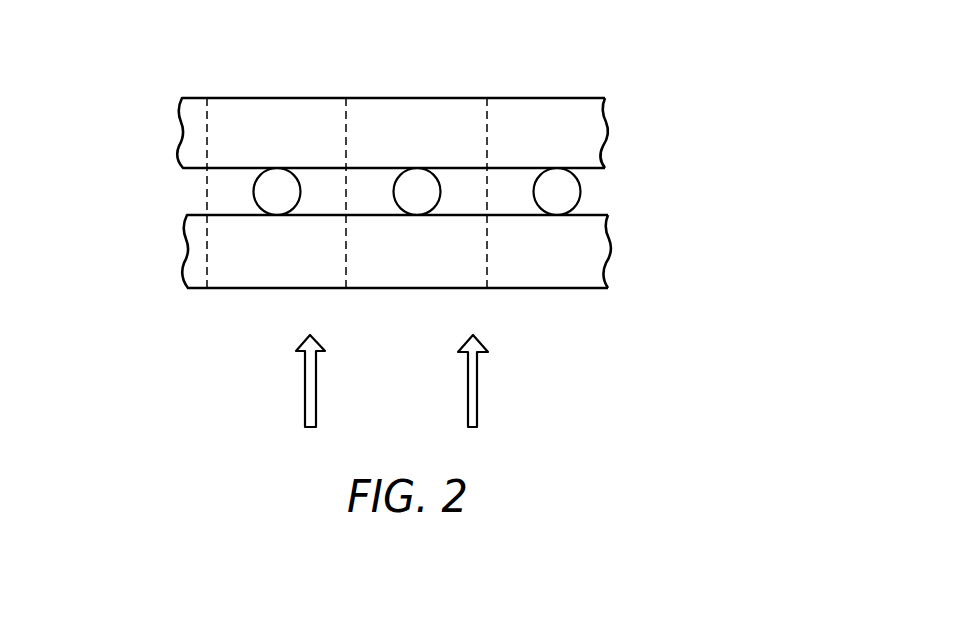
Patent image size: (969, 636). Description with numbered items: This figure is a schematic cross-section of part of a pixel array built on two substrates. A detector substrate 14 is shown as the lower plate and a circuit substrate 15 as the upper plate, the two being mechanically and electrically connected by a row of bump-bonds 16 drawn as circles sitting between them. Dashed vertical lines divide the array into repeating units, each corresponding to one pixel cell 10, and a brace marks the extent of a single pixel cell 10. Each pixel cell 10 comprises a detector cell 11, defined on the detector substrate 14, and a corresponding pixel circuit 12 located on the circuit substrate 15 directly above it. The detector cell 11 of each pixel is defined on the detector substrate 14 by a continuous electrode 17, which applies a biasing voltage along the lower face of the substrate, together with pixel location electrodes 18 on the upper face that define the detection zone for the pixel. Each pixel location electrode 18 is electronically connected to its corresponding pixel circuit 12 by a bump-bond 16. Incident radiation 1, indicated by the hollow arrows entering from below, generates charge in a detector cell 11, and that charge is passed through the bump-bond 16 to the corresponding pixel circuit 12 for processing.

The incident radiation 1 is at (305, 397).
The pixel cell 10 is at (487, 84).
The detector cell 11 is at (289, 263).
The pixel circuit 12 is at (289, 142).
The detector substrate 14 is at (610, 258).
The circuit substrate 15 is at (607, 132).
The bump-bond 16 is at (581, 192).
The continuous electrode 17 is at (228, 290).
The pixel location electrode 18 is at (231, 214).